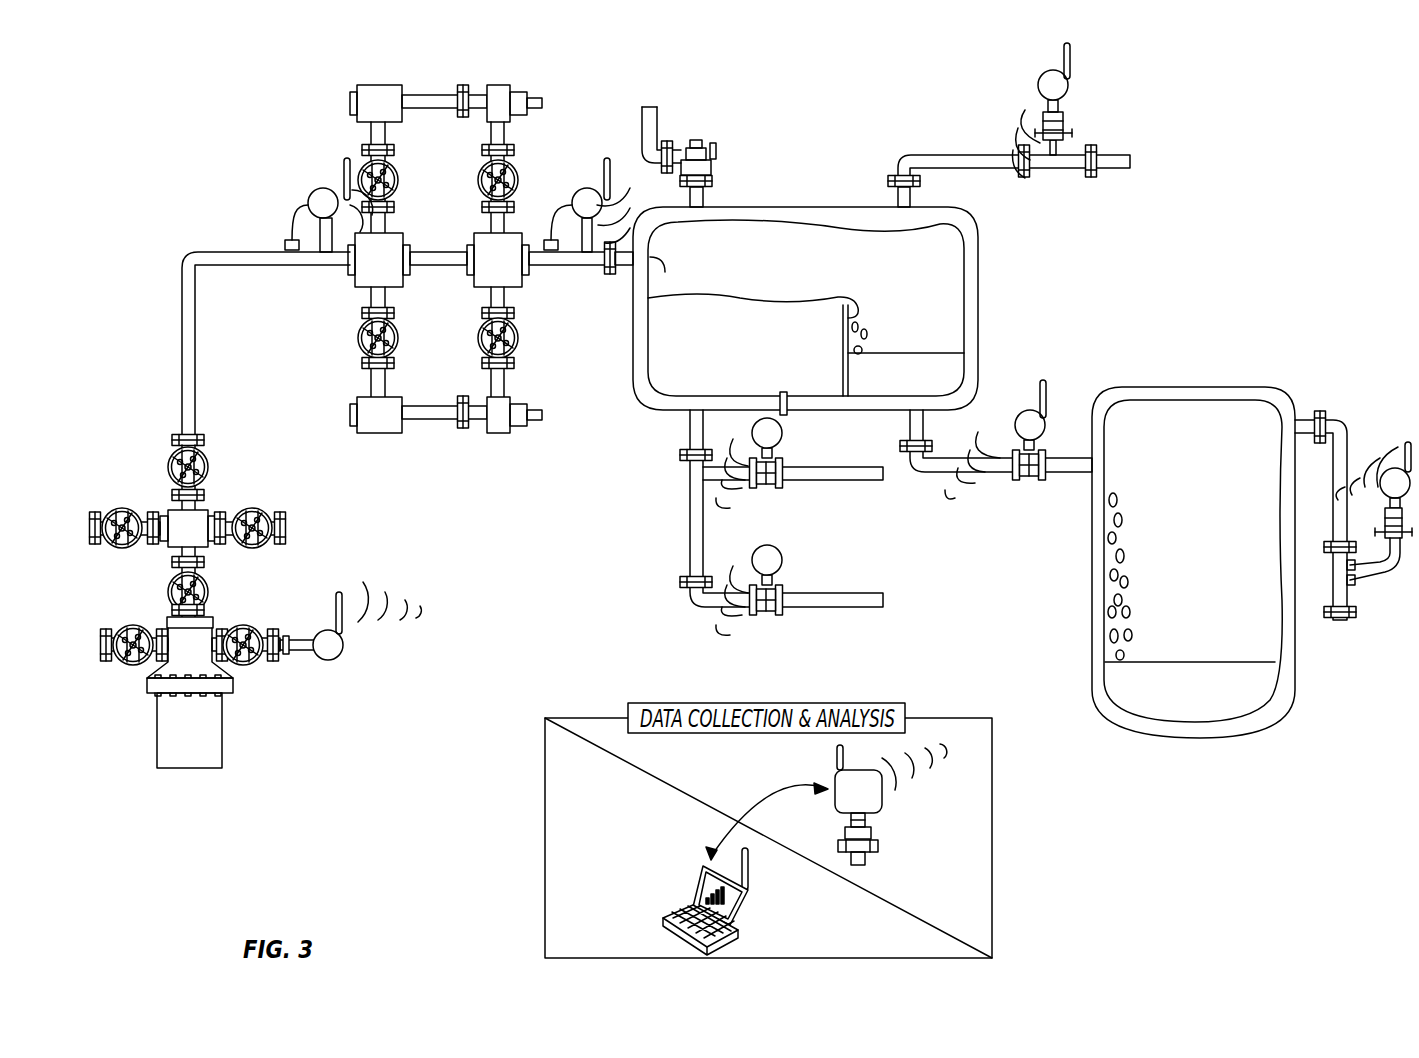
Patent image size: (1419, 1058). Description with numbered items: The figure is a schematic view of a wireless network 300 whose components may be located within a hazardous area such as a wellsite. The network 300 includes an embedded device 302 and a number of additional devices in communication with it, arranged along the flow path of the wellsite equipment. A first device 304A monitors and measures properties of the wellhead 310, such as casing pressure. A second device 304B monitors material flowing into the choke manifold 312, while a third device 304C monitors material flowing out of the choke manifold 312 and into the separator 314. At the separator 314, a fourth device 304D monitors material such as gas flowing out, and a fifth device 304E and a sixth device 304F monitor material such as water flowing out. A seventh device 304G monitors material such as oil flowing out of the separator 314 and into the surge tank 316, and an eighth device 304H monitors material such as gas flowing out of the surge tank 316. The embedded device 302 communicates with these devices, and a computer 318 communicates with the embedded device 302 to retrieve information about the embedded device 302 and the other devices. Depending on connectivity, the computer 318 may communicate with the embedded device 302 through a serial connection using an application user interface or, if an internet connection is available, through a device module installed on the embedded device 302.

The network 300 is at (1110, 922).
The embedded device 302 is at (868, 818).
The first device 304A is at (343, 652).
The second device 304B is at (320, 190).
The third device 304C is at (582, 190).
The fourth device 304D is at (1038, 83).
The fifth device 304E is at (783, 437).
The sixth device 304F is at (783, 564).
The seventh device 304G is at (1025, 410).
The eighth device 304H is at (1390, 468).
The wellhead 310 is at (222, 728).
The choke manifold 312 is at (469, 258).
The separator 314 is at (795, 213).
The surge tank 316 is at (1193, 388).
The computer 318 is at (680, 905).